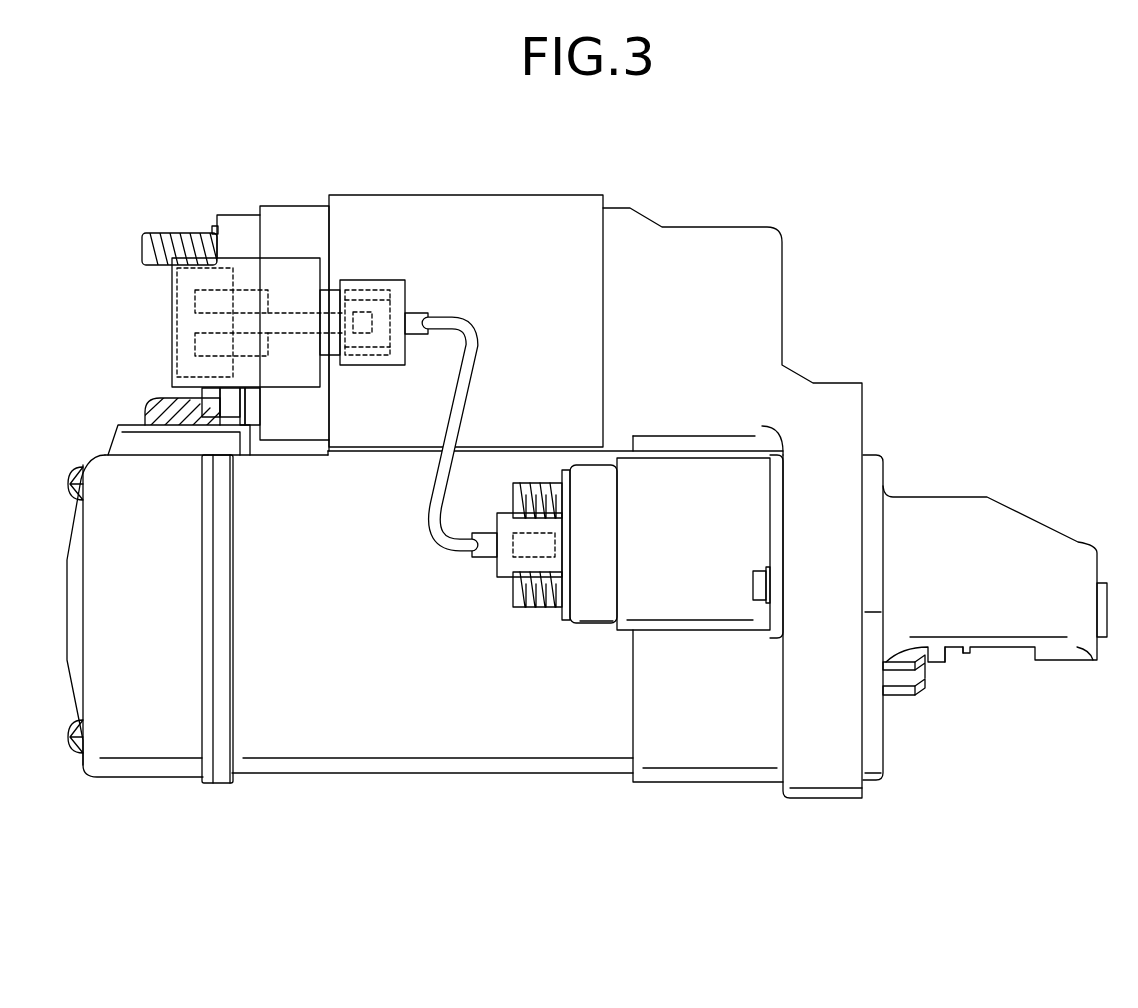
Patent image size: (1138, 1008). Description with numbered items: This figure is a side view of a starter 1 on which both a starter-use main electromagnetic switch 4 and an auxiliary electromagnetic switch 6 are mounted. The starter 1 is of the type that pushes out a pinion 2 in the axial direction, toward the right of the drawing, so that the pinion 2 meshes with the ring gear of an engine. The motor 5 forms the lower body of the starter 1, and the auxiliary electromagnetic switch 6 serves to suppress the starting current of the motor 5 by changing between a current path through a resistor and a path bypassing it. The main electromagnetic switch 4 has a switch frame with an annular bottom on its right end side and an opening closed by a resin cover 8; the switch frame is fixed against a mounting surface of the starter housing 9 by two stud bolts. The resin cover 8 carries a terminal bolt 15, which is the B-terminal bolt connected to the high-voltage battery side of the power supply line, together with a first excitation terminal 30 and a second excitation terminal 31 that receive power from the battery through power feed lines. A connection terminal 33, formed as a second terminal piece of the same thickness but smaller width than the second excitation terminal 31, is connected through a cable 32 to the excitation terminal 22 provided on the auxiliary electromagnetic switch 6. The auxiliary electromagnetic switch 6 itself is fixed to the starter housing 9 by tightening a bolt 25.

The starter 1 is at (803, 192).
The pinion 2 is at (922, 682).
The main electromagnetic switch 4 is at (539, 192).
The motor 5 is at (298, 776).
The auxiliary electromagnetic switch 6 is at (683, 636).
The resin cover 8 is at (296, 215).
The starter housing 9 is at (752, 347).
The terminal bolt 15 is at (157, 233).
The excitation terminal 22 is at (532, 562).
The bolt 25 is at (762, 590).
The first excitation terminal 30 is at (205, 302).
The second excitation terminal 31 is at (205, 347).
The cable 32 is at (438, 552).
The connection terminal 33 is at (355, 320).